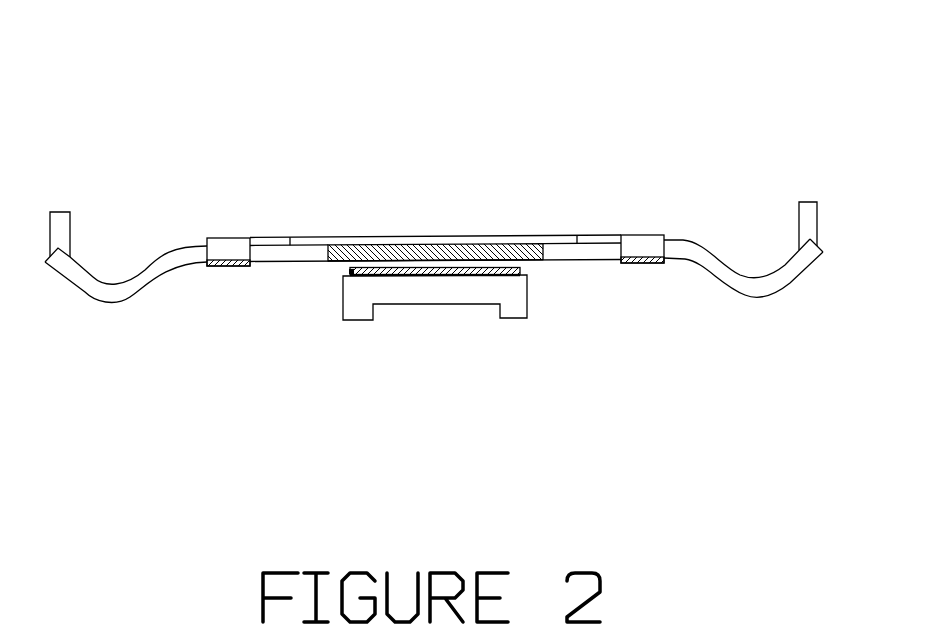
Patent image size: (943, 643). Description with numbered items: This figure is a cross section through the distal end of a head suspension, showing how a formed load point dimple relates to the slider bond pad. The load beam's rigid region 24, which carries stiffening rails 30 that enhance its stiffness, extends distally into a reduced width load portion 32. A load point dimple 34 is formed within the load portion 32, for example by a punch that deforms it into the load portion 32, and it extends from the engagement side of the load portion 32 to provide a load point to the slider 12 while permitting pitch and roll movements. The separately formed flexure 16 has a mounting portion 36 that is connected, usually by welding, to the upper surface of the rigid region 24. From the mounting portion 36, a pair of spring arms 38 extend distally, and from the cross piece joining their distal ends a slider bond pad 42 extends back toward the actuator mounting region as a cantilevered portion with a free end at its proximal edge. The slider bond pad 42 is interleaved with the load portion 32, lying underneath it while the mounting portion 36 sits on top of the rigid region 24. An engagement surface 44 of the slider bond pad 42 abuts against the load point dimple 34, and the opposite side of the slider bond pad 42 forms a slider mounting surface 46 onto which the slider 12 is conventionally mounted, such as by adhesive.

The slider 12 is at (360, 303).
The flexure 16 is at (523, 235).
The rigid region 24 is at (575, 252).
The stiffening rails 30 is at (112, 292).
The load portion 32 is at (343, 252).
The load point dimple 34 is at (441, 266).
The mounting portion 36 is at (302, 238).
The spring arms 38 is at (215, 252).
The slider bond pad 42 is at (347, 270).
The engagement surface 44 is at (394, 270).
The slider mounting surface 46 is at (468, 277).